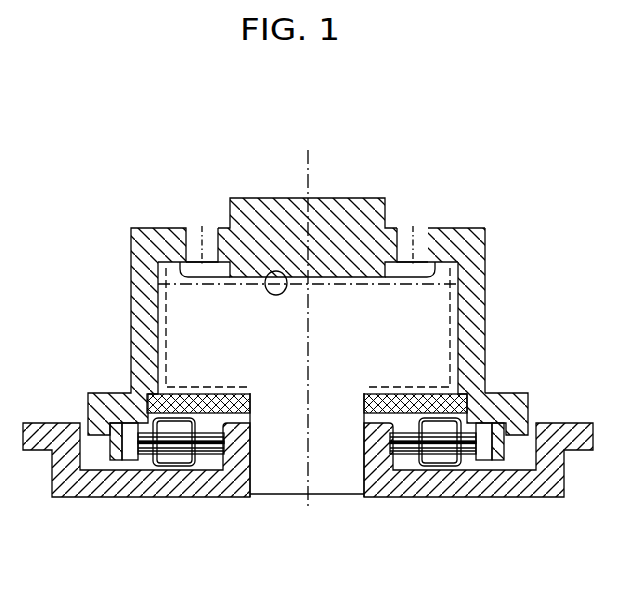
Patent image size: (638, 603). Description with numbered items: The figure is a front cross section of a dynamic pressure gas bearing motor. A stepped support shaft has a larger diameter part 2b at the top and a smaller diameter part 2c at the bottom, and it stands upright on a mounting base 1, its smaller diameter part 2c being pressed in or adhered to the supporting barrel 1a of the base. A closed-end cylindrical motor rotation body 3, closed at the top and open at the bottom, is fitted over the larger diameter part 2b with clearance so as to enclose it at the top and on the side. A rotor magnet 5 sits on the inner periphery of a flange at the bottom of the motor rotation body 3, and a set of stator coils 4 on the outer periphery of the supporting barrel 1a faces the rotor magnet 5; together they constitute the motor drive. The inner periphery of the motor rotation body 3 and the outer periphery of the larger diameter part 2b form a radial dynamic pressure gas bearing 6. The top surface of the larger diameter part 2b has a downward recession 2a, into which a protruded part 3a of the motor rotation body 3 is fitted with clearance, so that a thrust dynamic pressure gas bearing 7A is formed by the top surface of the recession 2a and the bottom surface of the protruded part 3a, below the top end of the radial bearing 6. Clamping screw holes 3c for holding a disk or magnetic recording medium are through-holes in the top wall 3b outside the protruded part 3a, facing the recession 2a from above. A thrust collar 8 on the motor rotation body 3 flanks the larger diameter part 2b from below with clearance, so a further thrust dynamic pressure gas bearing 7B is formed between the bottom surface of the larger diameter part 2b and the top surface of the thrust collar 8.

The mounting base 1 is at (562, 432).
The supporting barrel 1a is at (387, 455).
The recession 2a is at (428, 272).
The larger diameter part 2b is at (420, 321).
The smaller diameter part 2c is at (332, 475).
The motor rotation body 3 is at (121, 252).
The protruded part 3a is at (270, 272).
The top wall 3b is at (174, 236).
The clamping screw holes 3c is at (215, 228).
The stator coils 4 is at (167, 442).
The rotor magnet 5 is at (488, 453).
The radial dynamic pressure gas bearing 6 is at (477, 365).
The thrust dynamic pressure gas bearing 7A is at (345, 280).
The thrust dynamic pressure gas bearing 7B is at (203, 400).
The thrust collar 8 is at (156, 378).